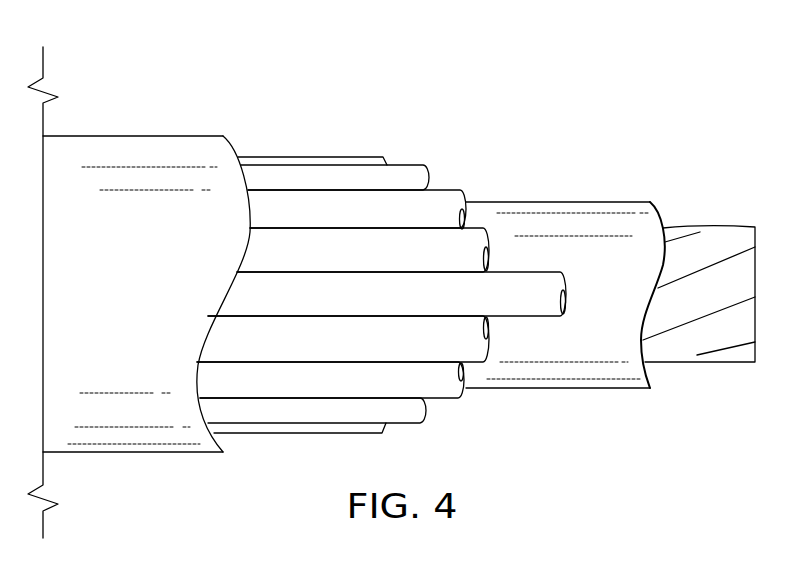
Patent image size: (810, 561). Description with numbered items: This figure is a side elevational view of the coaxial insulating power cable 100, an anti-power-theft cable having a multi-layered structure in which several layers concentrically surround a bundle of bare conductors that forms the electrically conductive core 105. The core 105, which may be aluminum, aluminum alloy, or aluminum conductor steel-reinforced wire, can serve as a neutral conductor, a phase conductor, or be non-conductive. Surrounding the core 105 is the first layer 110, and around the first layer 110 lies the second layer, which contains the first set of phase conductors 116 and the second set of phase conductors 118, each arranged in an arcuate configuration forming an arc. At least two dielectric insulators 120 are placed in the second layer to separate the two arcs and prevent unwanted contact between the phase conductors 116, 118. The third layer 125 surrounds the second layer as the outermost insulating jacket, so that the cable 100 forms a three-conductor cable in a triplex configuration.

The coaxial insulating power cable 100 is at (612, 104).
The electrically conductive core 105 is at (733, 227).
The first layer 110 is at (590, 200).
The first set of phase conductors 116 is at (293, 156).
The second set of phase conductors 118 is at (293, 436).
The dielectric insulators 120 is at (530, 318).
The third layer 125 is at (130, 136).